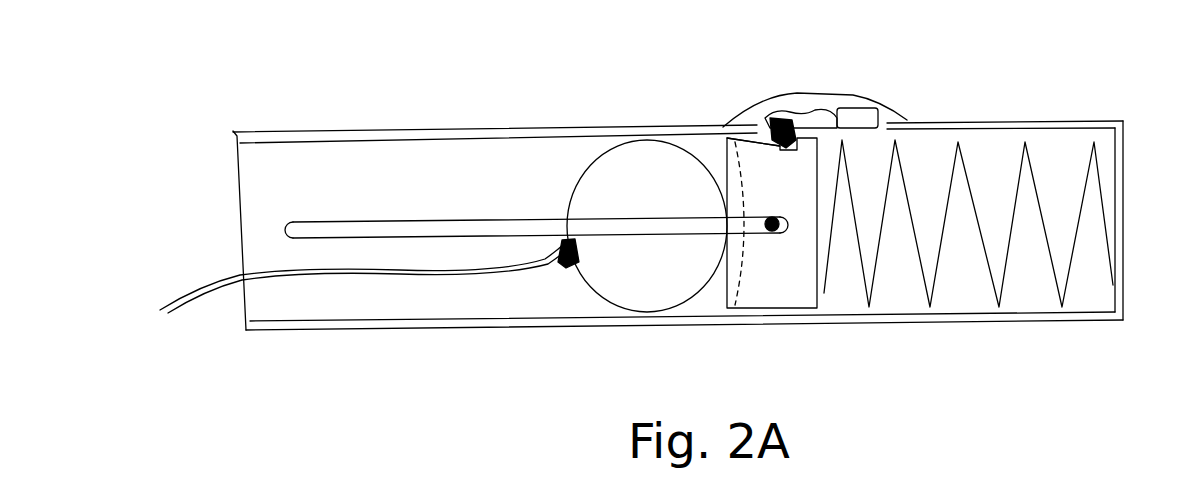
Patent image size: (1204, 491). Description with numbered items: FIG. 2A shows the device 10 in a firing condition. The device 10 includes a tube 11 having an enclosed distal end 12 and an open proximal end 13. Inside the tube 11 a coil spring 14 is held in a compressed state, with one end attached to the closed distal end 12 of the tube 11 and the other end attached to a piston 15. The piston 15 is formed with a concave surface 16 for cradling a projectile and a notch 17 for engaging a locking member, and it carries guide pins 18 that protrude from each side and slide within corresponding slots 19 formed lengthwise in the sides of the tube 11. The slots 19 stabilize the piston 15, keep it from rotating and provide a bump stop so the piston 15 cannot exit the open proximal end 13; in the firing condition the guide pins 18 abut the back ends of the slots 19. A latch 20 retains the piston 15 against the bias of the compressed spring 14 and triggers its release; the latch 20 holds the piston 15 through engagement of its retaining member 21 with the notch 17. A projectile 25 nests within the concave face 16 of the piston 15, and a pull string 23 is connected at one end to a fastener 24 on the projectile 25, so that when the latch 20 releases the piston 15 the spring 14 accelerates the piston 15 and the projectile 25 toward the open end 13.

The device 10 is at (712, 35).
The tube 11 is at (1088, 325).
The distal end 12 is at (1122, 240).
The proximal end 13 is at (235, 208).
The coil spring 14 is at (993, 283).
The piston 15 is at (793, 312).
The concave surface 16 is at (740, 267).
The notch 17 is at (778, 151).
The guide pins 18 is at (781, 232).
The slots 19 is at (432, 223).
The latch 20 is at (873, 97).
The retaining member 21 is at (757, 110).
The pull string 23 is at (408, 277).
The fastener 24 is at (562, 263).
The projectile 25 is at (658, 287).